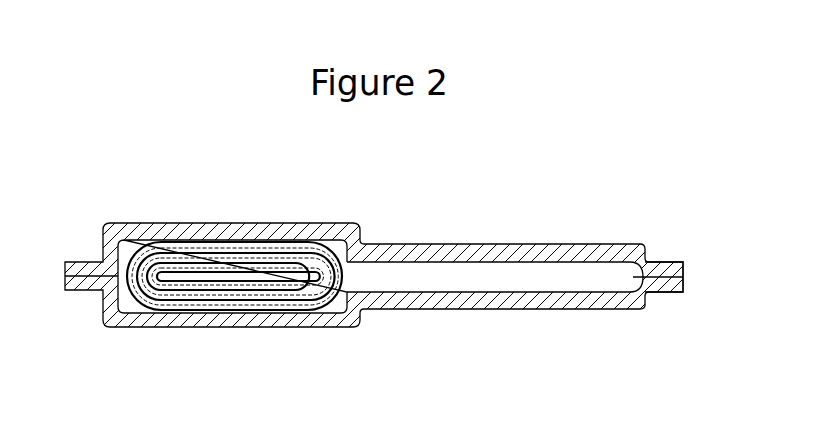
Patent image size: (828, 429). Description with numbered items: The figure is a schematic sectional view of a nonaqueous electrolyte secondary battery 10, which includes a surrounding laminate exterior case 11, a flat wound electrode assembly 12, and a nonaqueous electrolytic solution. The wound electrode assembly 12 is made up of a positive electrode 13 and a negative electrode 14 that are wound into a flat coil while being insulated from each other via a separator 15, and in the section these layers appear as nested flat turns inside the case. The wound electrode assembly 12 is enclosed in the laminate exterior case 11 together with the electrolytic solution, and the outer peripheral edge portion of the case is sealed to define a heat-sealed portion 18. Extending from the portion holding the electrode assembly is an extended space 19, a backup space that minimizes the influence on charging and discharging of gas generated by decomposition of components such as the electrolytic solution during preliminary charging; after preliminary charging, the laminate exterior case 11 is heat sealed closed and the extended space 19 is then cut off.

The nonaqueous electrolyte secondary battery 10 is at (80, 172).
The laminate exterior case 11 is at (527, 249).
The wound electrode assembly 12 is at (295, 172).
The positive electrode 13 is at (320, 252).
The negative electrode 14 is at (294, 243).
The separator 15 is at (318, 248).
The heat-sealed portion 18 is at (668, 270).
The extended space 19 is at (448, 276).